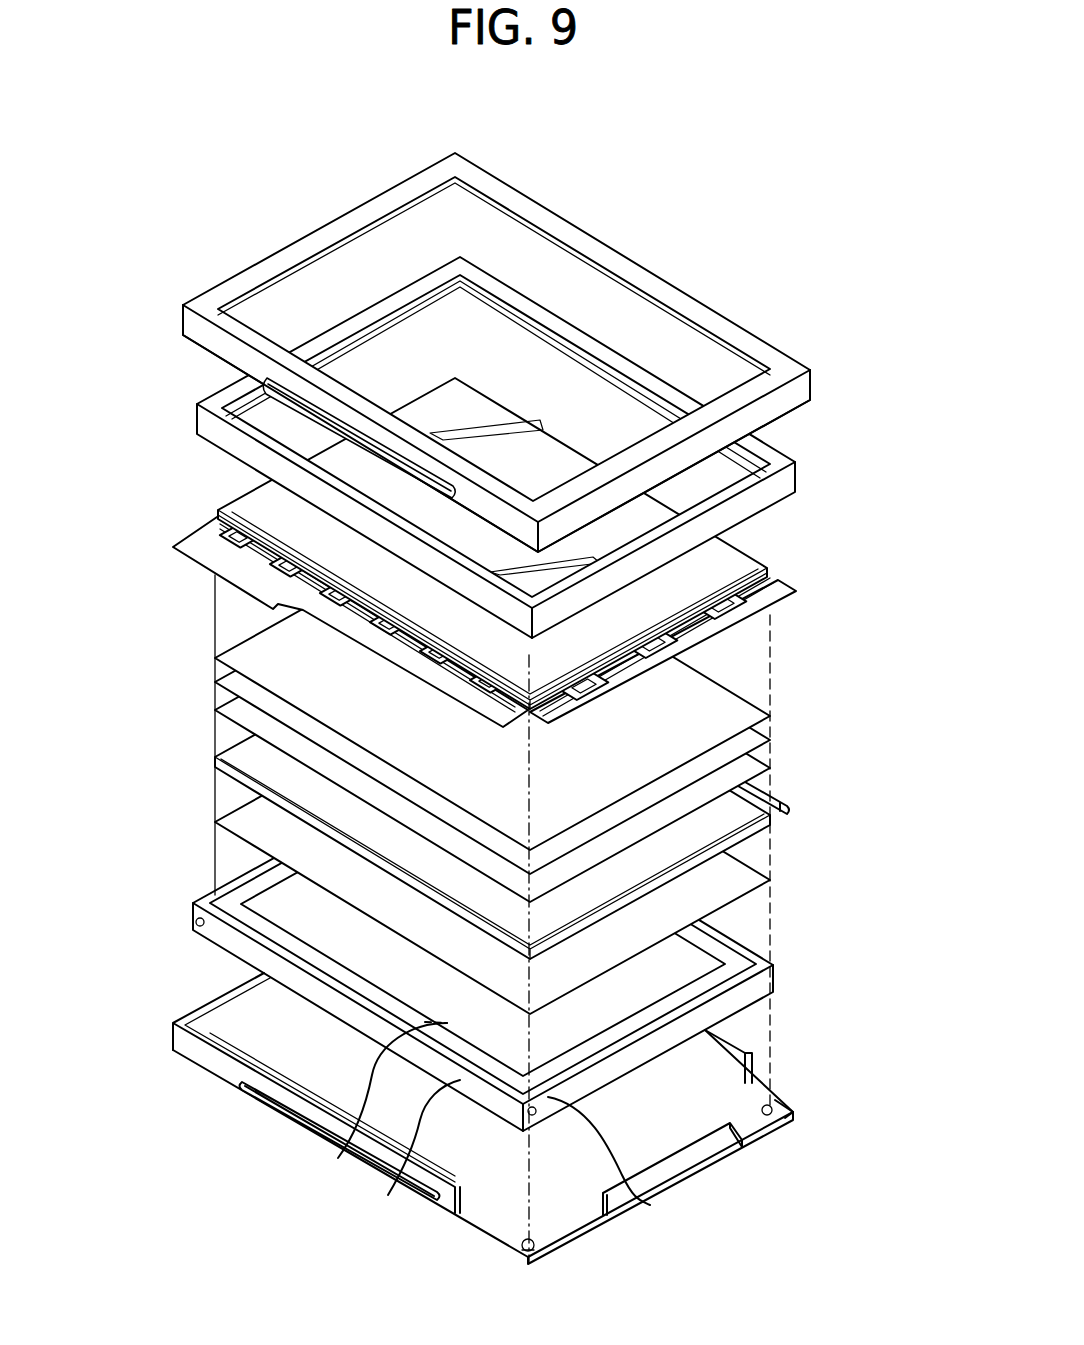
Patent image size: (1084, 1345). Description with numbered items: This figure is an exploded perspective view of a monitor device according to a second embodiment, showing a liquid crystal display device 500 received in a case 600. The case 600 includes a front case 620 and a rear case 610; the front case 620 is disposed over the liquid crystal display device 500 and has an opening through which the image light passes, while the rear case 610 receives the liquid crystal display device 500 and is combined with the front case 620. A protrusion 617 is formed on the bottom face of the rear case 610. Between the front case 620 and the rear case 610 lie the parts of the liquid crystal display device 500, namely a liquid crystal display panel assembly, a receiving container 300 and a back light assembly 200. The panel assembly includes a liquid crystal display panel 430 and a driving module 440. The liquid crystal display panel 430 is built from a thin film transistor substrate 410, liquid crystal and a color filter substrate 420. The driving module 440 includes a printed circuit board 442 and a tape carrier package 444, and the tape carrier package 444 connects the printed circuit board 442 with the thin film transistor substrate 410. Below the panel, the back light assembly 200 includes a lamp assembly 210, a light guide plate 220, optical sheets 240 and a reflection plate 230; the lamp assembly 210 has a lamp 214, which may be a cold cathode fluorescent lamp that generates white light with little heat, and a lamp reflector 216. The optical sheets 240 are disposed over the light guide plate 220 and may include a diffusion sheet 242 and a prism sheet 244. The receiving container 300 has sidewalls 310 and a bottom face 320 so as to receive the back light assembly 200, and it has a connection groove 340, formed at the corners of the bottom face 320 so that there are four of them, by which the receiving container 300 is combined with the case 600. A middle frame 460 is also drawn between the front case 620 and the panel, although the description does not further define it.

The case 600 is at (539, 352).
The front case 620 is at (812, 388).
The middle frame (mold frame) 460 is at (539, 447).
The liquid crystal display panel 430 is at (529, 543).
The color filter substrate 420 is at (267, 502).
The thin film transistor substrate 410 is at (766, 572).
The driving module 440 is at (423, 607).
The tape carrier package 444 is at (222, 522).
The printed circuit board 442 is at (185, 547).
The liquid crystal display device 500 is at (500, 760).
The back light assembly 200 is at (469, 769).
The optical sheets 240 is at (432, 713).
The prism sheet 244 is at (201, 652).
The diffusion sheet 242 is at (215, 710).
The light guide plate 220 is at (520, 791).
The reflection plate 230 is at (215, 822).
The lamp assembly 210 is at (819, 809).
The lamp reflector 216 is at (772, 798).
The lamp 214 is at (783, 813).
The receiving container 300 is at (790, 973).
The rear case 610 is at (520, 1118).
The protrusion 617 is at (793, 1115).
The sidewalls 310 is at (393, 1183).
The bottom face 320 is at (337, 1157).
The connection groove 340 is at (647, 1200).